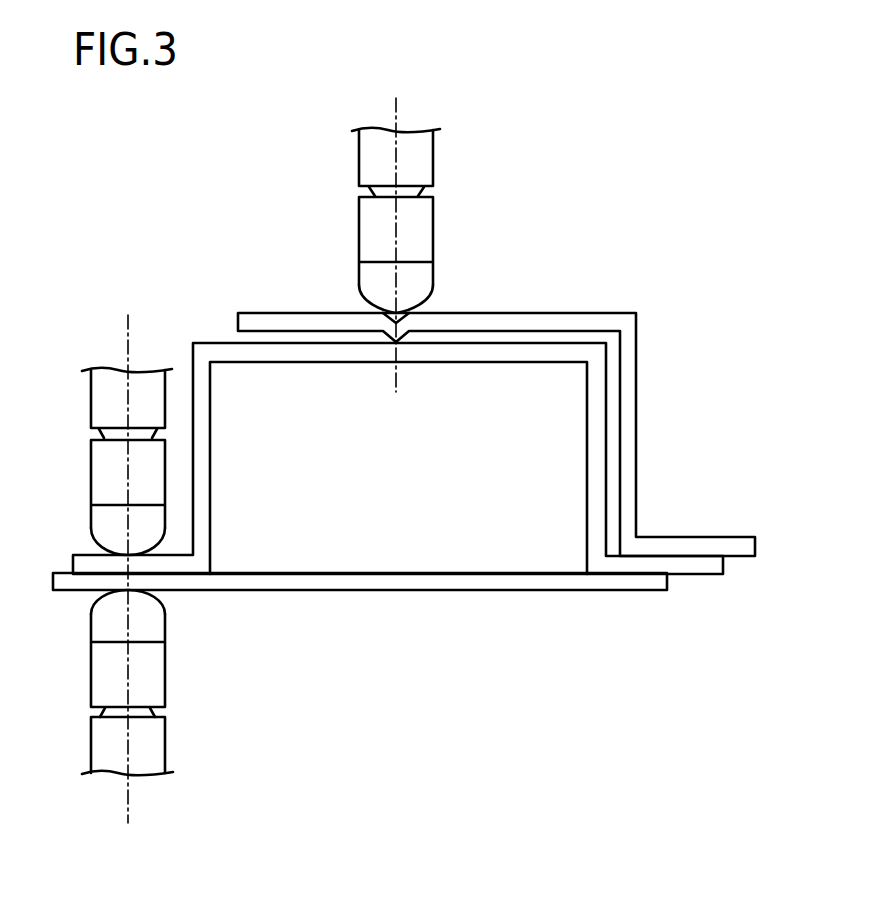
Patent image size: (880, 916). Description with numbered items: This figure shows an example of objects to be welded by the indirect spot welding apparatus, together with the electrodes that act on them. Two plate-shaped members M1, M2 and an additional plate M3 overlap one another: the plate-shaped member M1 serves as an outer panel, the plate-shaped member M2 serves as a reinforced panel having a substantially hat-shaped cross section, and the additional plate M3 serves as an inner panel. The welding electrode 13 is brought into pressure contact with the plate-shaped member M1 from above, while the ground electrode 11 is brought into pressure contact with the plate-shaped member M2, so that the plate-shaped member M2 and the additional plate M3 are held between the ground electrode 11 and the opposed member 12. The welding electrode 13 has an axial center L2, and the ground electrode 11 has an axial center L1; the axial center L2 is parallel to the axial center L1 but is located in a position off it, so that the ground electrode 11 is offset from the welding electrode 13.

The ground electrode 11 is at (104, 527).
The opposed member 12 is at (103, 621).
The welding electrode 13 is at (422, 285).
The axial center L1 is at (128, 335).
The axial center L2 is at (397, 380).
The plate-shaped member M1 is at (689, 537).
The plate-shaped member M2 is at (700, 575).
The additional plate M3 is at (540, 592).